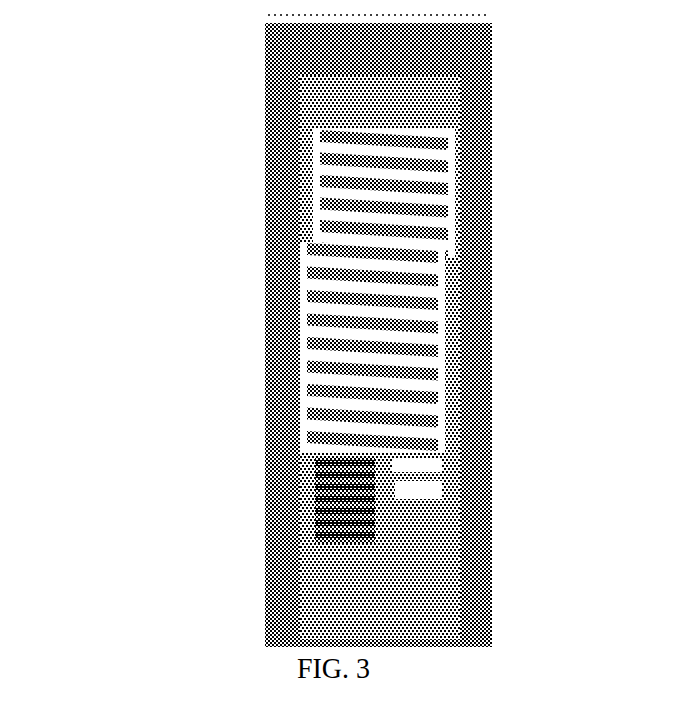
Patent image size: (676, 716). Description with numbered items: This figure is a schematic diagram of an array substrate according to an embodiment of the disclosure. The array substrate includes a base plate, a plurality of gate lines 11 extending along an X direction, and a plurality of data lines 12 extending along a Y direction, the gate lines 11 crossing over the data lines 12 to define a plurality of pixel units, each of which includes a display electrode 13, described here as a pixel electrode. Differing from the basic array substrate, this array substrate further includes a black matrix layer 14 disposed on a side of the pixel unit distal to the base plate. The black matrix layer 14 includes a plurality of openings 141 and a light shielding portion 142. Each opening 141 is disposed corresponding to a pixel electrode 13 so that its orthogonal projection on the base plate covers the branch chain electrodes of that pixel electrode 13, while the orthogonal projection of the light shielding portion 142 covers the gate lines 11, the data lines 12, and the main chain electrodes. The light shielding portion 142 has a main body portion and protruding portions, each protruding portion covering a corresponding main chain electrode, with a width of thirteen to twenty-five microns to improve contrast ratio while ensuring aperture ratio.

The gate line 11 is at (351, 495).
The data line 12 is at (483, 177).
The display electrode 13 is at (370, 283).
The black matrix layer 14 is at (334, 264).
The opening 141 is at (307, 381).
The light shielding portion 142 is at (278, 481).